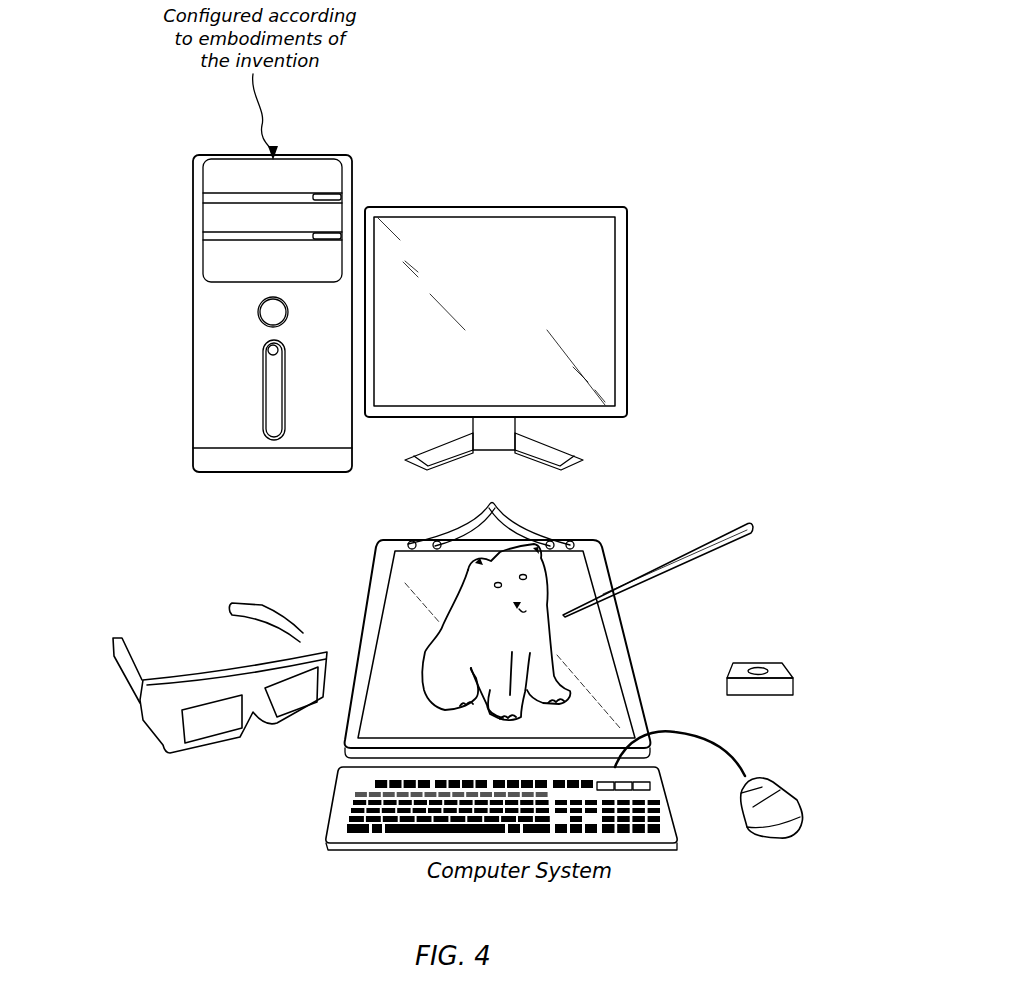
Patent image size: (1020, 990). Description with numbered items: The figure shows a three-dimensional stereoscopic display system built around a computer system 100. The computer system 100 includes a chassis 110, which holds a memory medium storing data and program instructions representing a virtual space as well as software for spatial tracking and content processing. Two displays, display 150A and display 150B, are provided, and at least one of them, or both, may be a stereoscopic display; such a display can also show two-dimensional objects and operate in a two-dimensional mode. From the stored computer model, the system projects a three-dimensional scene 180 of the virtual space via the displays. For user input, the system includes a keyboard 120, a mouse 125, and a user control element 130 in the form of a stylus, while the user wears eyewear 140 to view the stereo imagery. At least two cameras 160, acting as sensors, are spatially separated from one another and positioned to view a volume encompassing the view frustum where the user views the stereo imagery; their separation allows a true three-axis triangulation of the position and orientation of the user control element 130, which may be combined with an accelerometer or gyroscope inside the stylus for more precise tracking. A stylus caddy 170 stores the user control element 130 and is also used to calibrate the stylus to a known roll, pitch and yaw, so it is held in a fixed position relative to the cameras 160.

The computer system 100 is at (663, 116).
The chassis 110 is at (322, 155).
The keyboard 120 is at (648, 853).
The mouse 125 is at (778, 840).
The user control element 130 is at (742, 523).
The eyewear 140 is at (104, 647).
The display 150A is at (528, 207).
The display 150B is at (623, 640).
The cameras 160 is at (489, 514).
The stylus caddy 170 is at (768, 662).
The scene 180 is at (440, 591).